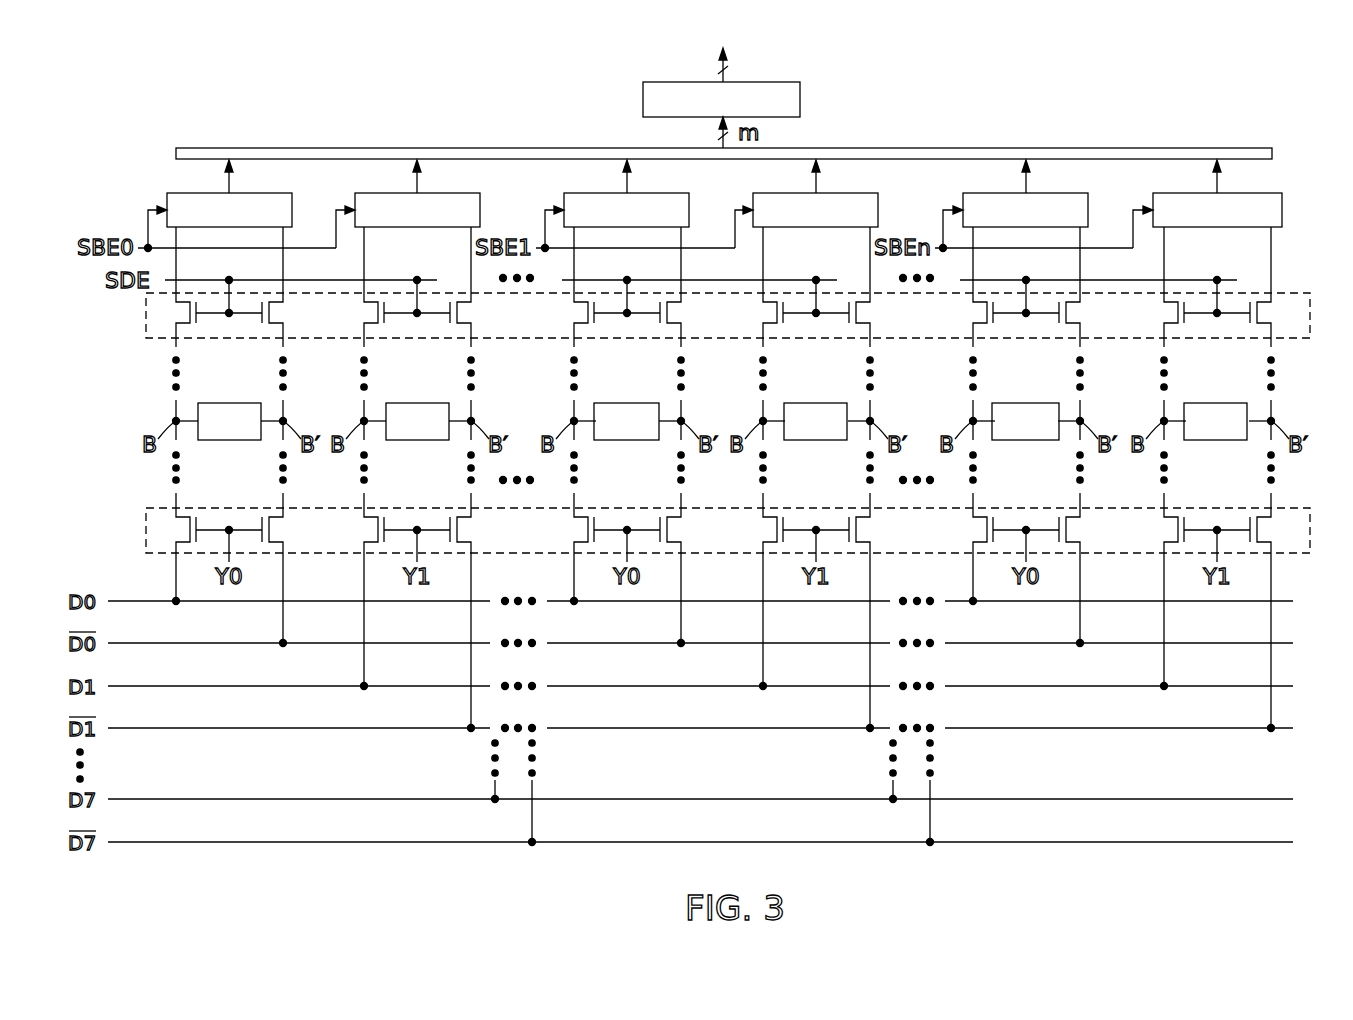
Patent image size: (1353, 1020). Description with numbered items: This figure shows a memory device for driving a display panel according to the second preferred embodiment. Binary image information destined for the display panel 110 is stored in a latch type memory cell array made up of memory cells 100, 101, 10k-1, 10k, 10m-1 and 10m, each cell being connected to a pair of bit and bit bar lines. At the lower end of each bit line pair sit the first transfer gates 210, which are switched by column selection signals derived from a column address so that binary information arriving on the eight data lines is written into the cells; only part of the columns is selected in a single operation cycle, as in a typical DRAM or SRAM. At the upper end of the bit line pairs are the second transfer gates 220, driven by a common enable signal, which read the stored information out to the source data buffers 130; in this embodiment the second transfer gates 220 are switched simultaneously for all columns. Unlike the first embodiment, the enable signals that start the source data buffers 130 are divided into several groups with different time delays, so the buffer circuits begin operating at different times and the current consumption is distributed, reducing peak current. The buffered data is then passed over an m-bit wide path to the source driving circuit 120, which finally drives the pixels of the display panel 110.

The display panel 110 is at (722, 52).
The source driving circuit 120 is at (721, 99).
The source data buffers 130 is at (760, 210).
The second transfer gates 220 is at (146, 316).
The first transfer gates 210 is at (146, 530).
The latch type memory cell 100 is at (229, 421).
The latch type memory cell 101 is at (417, 421).
The latch type memory cell 10k-1 is at (626, 421).
The latch type memory cell 10k is at (815, 421).
The latch type memory cell 10m-1 is at (1025, 421).
The latch type memory cell 10m is at (1215, 421).